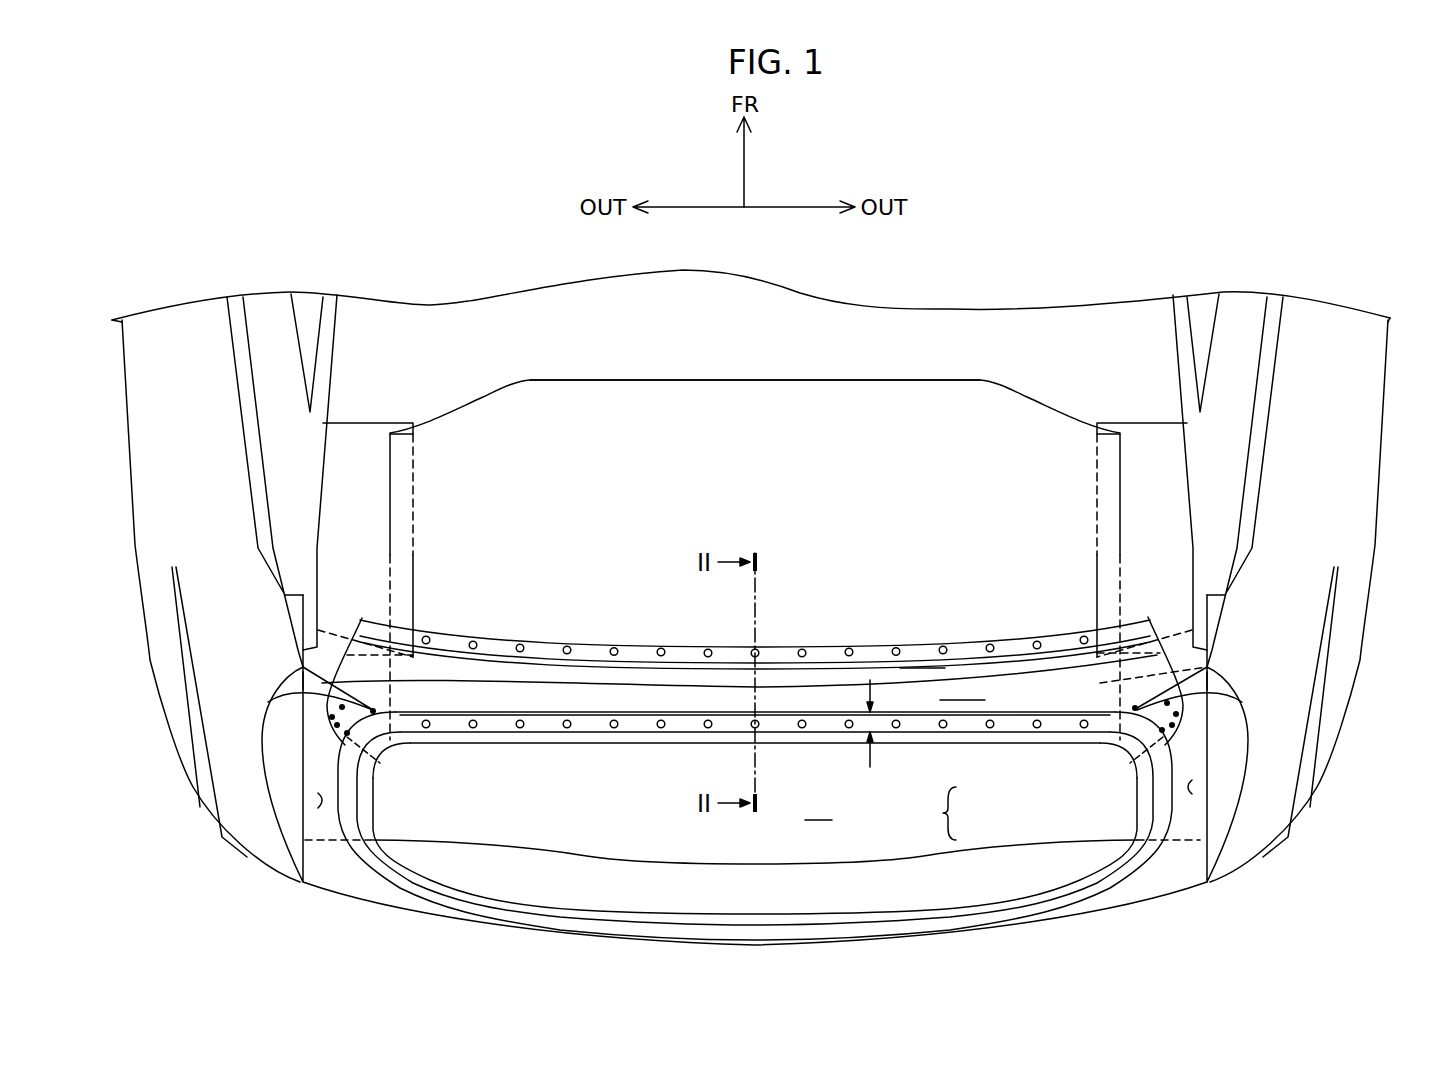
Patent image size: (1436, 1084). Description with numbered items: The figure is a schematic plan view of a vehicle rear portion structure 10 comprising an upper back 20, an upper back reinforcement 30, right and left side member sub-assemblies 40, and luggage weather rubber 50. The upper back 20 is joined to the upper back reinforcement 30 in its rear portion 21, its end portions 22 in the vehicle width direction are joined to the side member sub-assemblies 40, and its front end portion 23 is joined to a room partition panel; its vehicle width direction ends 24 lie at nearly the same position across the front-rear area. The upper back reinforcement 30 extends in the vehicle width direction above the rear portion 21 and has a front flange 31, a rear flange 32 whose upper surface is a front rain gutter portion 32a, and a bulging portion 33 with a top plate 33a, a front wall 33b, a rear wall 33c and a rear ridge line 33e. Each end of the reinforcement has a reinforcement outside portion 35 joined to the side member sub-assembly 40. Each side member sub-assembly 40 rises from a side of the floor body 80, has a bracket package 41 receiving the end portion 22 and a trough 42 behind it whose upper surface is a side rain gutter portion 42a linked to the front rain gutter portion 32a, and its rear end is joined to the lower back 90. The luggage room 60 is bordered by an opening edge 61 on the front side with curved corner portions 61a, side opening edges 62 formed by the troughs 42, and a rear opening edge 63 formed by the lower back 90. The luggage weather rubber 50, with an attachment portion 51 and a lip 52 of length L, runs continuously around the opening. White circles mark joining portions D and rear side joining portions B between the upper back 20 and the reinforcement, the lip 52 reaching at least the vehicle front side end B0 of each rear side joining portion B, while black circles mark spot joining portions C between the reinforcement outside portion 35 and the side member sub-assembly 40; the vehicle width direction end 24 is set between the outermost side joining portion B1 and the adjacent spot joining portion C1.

The vehicle rear portion structure 10 is at (447, 252).
The upper back 20 is at (838, 356).
The rear portion 21 is at (1207, 667).
The end portions 22 is at (402, 472).
The front end portion 23 is at (690, 378).
The vehicle width direction ends 24 is at (388, 507).
The upper back reinforcement 30 is at (655, 620).
The front flange 31 is at (778, 650).
The rear flange 32 is at (1013, 707).
The front rain gutter portion 32a is at (1061, 707).
The bulging portion 33 is at (830, 668).
The top plate 33a is at (922, 672).
The front wall 33b is at (877, 662).
The rear wall 33c is at (961, 700).
The ridge line 33e is at (775, 688).
The reinforcement outside portion 35 is at (367, 657).
The side member sub-assembly 40 is at (165, 523).
The bracket package 41 is at (335, 477).
The trough 42 is at (320, 771).
The side rain gutter portion 42a is at (318, 806).
The luggage weather rubber 50 is at (934, 813).
The attachment portion 51 is at (1140, 780).
The lip 52 is at (1162, 790).
The luggage room 60 is at (794, 686).
The opening edge 61 is at (767, 745).
The corner portion 61a is at (428, 763).
The vehicle width direction side opening edge 62 is at (377, 813).
The opening edge 63 is at (812, 912).
The floor body 80 is at (1025, 330).
The lower back 90 is at (918, 880).
The rear side joining portions B is at (661, 728).
The vehicle front side end B0 is at (754, 720).
The outermost side joining portion B1 is at (427, 728).
The spot joining portions C is at (347, 733).
The adjacent spot joining portion C1 is at (303, 680).
The portions D is at (614, 648).
The length L is at (878, 731).